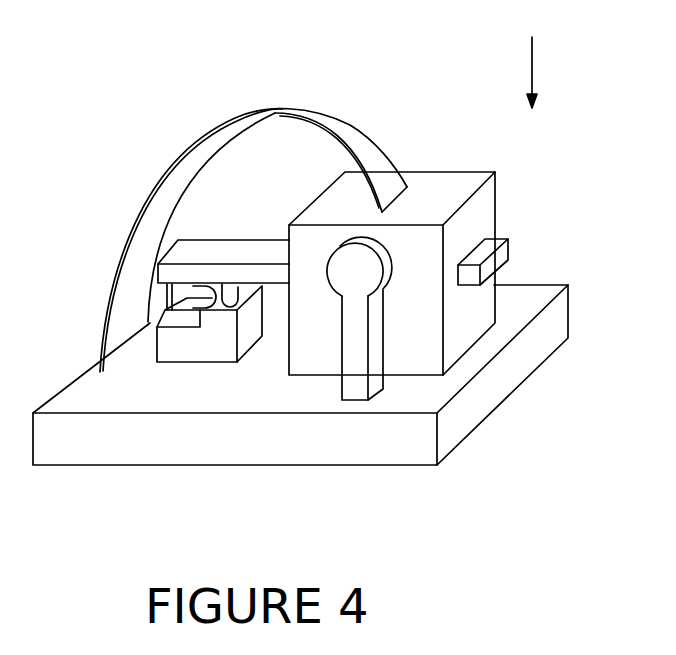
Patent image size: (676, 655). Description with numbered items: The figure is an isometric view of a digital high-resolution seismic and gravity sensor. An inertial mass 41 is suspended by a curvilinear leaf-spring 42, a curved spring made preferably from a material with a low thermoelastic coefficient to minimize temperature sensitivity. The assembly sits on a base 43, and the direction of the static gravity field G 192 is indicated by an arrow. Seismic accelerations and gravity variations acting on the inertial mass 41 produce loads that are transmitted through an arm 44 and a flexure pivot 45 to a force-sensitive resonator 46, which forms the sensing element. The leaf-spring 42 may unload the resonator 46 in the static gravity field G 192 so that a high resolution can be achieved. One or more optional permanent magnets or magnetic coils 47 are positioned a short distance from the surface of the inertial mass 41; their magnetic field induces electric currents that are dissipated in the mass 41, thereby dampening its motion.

The inertial mass 41 is at (496, 211).
The curvilinear leaf-spring 42 is at (350, 121).
The base 43 is at (518, 390).
The arm 44 is at (268, 240).
The flexure pivot 45 is at (226, 286).
The force-sensitive resonator 46 is at (165, 299).
The permanent magnets or magnetic coils 47 is at (348, 272).
The static gravity field G 192 is at (533, 52).